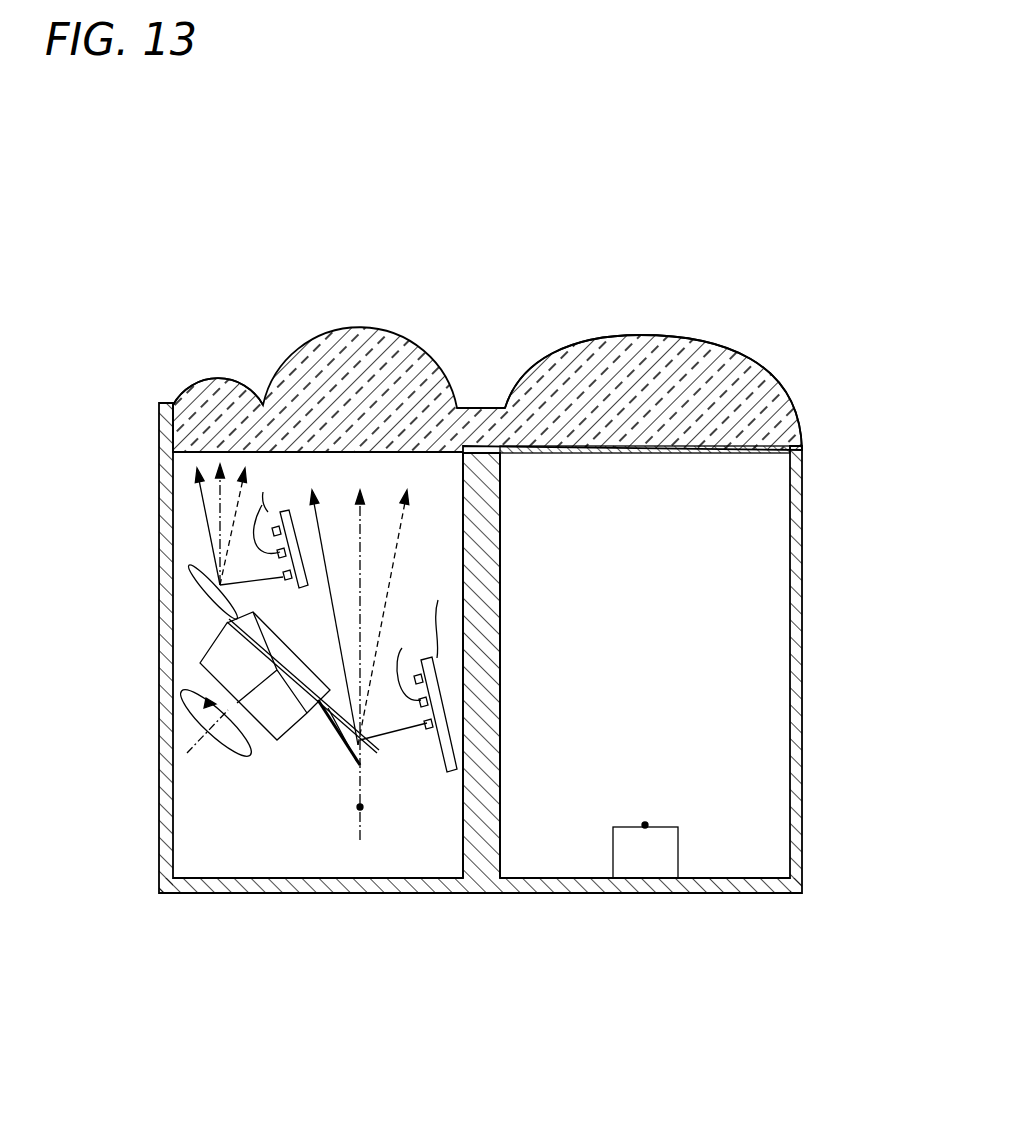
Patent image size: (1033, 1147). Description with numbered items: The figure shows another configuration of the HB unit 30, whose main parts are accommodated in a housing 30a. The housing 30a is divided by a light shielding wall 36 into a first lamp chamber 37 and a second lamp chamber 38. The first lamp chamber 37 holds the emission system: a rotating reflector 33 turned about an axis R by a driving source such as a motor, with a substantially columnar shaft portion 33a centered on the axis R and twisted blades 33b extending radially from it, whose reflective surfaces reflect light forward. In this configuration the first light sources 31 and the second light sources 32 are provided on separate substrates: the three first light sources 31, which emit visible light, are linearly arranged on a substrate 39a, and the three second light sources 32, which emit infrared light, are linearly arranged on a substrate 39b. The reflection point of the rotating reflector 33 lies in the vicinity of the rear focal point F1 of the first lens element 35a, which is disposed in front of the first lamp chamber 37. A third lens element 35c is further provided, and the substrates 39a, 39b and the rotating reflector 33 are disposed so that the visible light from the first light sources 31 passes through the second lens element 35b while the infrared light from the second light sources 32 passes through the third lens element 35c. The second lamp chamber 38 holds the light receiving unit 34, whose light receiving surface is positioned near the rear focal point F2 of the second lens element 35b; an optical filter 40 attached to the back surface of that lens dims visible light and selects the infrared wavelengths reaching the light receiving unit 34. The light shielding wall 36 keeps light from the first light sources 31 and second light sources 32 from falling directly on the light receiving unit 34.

The HB unit 30 is at (466, 285).
The housing 30a is at (158, 705).
The first light sources 31 is at (412, 678).
The second light sources 32 is at (266, 518).
The rotating reflector 33 is at (213, 693).
The shaft portion 33a is at (285, 728).
The blades 33b is at (198, 580).
The light receiving unit 34 is at (679, 853).
The first lens element 35a is at (360, 328).
The second lens element 35b is at (663, 336).
The third lens element 35c is at (182, 338).
The light shielding wall 36 is at (492, 837).
The first lamp chamber 37 is at (446, 494).
The second lamp chamber 38 is at (762, 494).
The substrate 39a is at (427, 674).
The substrate 39b is at (300, 598).
The optical filter 40 is at (768, 436).
The rear focal point of the first lens element F1 is at (358, 807).
The rear focal point of the second lens element F2 is at (645, 822).
The axis R is at (215, 728).